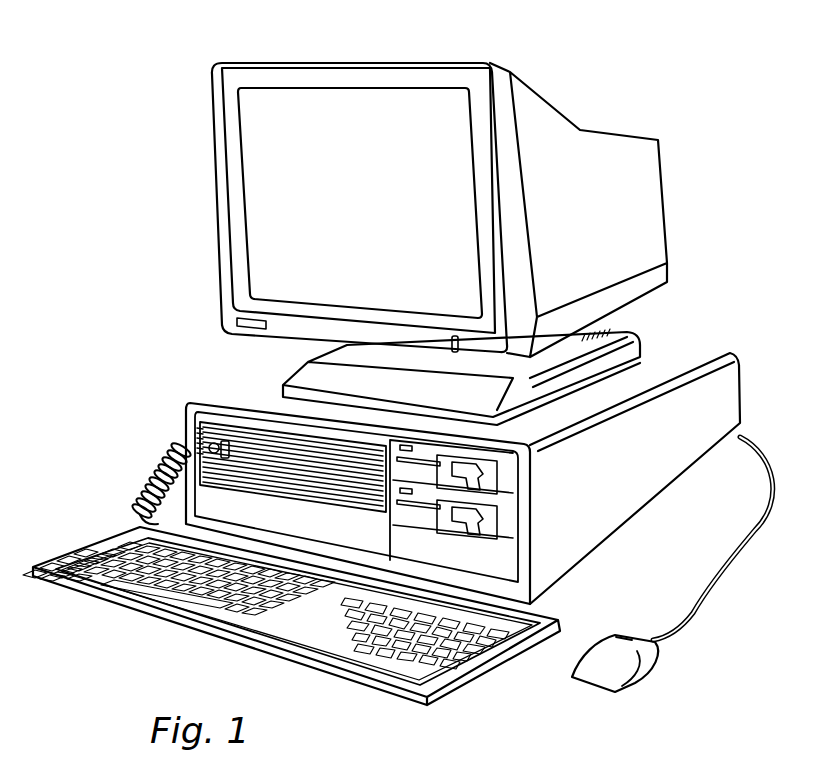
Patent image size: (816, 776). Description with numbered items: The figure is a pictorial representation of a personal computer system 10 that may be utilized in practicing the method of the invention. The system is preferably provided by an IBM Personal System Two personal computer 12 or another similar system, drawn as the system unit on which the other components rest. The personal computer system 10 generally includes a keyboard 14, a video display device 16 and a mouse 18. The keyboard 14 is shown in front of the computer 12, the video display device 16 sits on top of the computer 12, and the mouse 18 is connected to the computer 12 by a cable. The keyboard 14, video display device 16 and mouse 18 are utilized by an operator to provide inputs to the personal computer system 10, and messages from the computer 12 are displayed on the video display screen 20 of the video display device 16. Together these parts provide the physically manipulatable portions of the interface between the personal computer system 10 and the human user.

The personal computer system 10 is at (235, 35).
The personal computer 12 is at (613, 517).
The keyboard 14 is at (477, 670).
The video display device 16 is at (567, 148).
The mouse 18 is at (642, 665).
The video display screen 20 is at (263, 224).